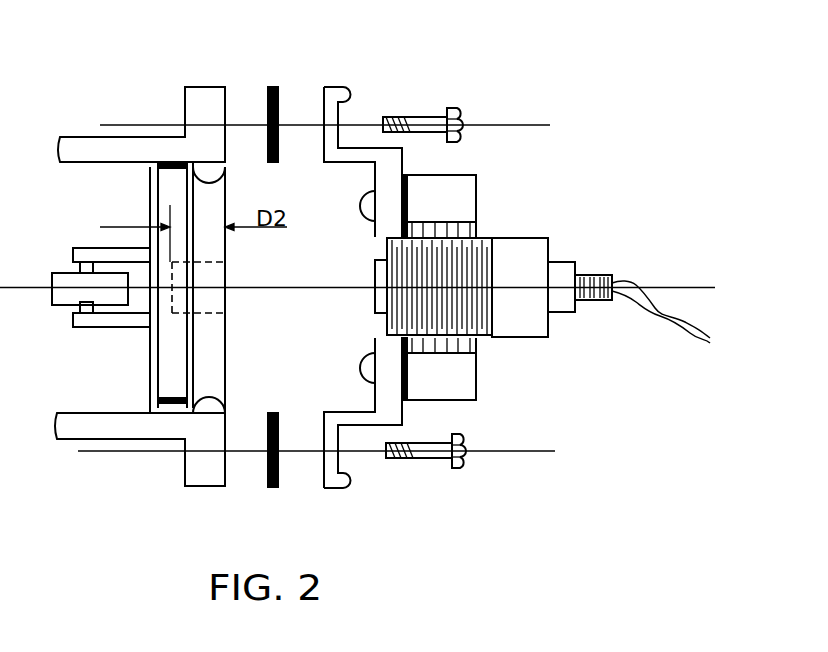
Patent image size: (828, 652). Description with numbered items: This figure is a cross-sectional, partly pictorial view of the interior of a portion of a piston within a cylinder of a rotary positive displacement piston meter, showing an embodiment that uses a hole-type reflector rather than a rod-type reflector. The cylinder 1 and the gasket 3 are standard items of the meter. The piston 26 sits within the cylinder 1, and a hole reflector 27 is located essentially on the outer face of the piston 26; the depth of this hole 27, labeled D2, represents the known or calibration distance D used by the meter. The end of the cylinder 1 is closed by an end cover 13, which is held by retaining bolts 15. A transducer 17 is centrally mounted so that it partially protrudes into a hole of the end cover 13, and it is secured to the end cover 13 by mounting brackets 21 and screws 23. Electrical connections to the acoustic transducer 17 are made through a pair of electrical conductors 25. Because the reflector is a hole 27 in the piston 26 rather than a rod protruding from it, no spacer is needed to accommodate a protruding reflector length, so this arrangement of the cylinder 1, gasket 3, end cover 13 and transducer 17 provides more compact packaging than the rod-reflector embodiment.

The cylinder 1 is at (202, 87).
The gasket 3 is at (273, 87).
The end cover 13 is at (347, 90).
The retaining bolts 15 is at (433, 117).
The transducer 17 is at (518, 337).
The mounting brackets 21 is at (476, 205).
The screws 23 is at (368, 202).
The electrical conductors 25 is at (647, 308).
The piston 26 is at (150, 197).
The hole reflector 27 is at (207, 262).